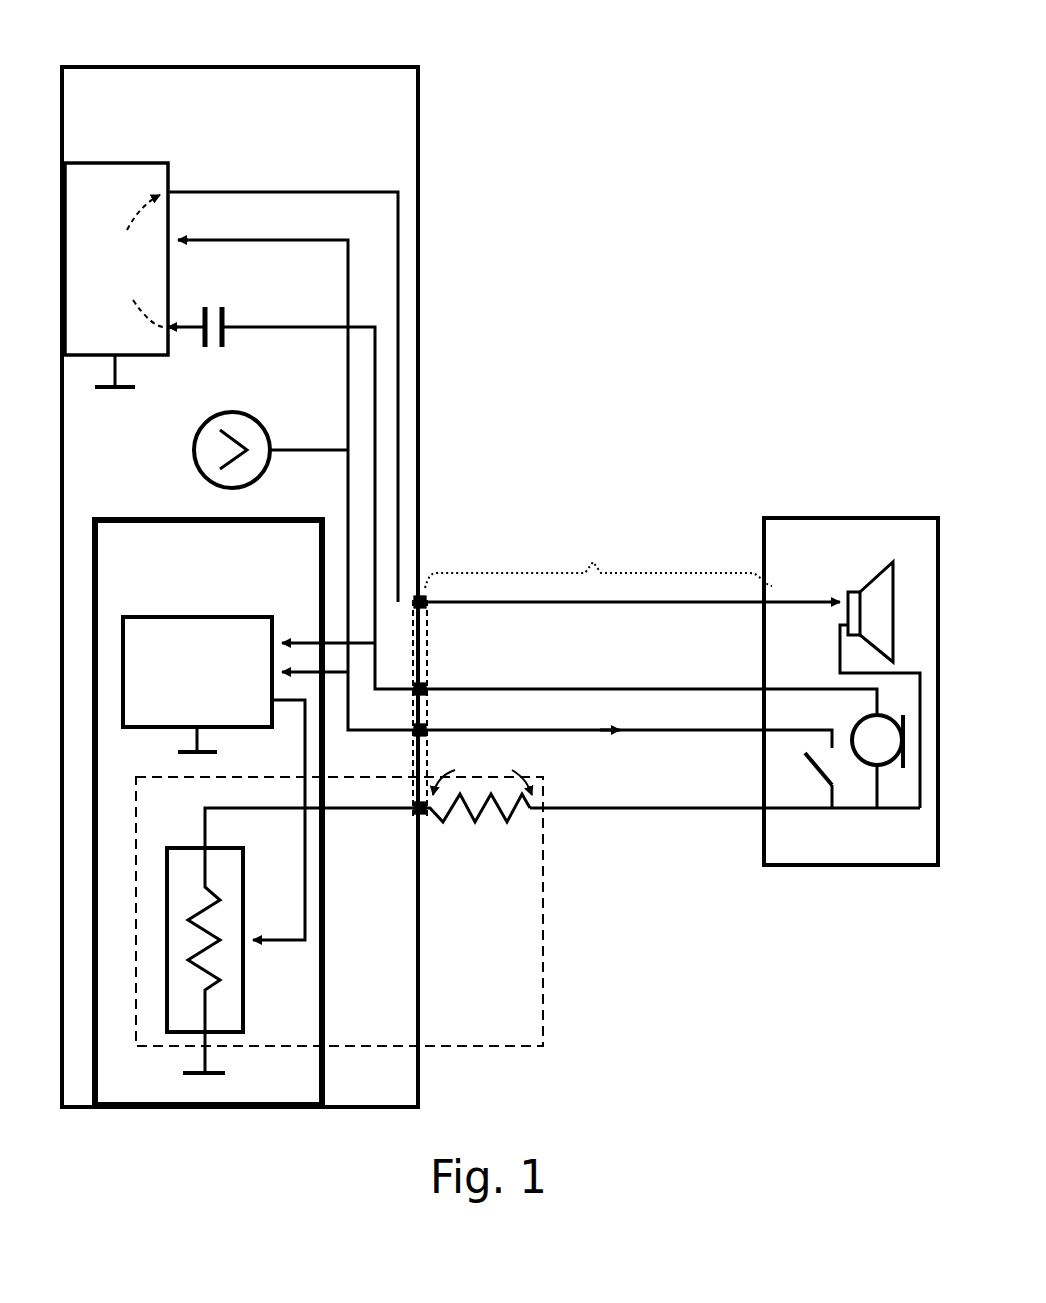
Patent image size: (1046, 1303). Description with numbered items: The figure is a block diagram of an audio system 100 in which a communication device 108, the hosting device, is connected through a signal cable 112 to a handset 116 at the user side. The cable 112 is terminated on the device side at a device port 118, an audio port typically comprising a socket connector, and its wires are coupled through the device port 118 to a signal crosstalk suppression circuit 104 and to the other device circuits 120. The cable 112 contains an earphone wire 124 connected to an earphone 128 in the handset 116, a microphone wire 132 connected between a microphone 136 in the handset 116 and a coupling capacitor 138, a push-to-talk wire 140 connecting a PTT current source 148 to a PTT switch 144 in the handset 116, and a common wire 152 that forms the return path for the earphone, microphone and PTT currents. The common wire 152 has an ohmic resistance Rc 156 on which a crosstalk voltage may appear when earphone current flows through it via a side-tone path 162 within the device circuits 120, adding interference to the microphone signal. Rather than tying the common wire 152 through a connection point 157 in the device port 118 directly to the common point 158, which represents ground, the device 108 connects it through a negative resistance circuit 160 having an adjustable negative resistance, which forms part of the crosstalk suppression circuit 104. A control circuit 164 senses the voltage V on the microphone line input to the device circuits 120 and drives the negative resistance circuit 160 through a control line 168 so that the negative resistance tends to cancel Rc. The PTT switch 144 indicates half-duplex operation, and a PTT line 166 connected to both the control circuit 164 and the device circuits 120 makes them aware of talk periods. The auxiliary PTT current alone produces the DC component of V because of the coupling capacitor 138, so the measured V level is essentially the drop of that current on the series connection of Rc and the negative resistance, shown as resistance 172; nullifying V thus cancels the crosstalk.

The audio system 100 is at (458, 50).
The communication device 108 is at (118, 65).
The device circuits 120 is at (116, 162).
The side-tone path 162 is at (137, 217).
The coupling capacitor 138 is at (240, 306).
The common point 158 is at (112, 390).
The PTT current source 148 is at (262, 425).
The signal crosstalk suppression circuit 104 is at (142, 518).
The control circuit 164 is at (165, 617).
The PTT line 166 is at (350, 297).
The device port 118 is at (422, 594).
The signal cable 112 is at (668, 572).
The earphone wire 124 is at (728, 606).
The microphone wire 132 is at (522, 688).
The push-to-talk wire 140 is at (700, 733).
The earphone 128 is at (853, 591).
The handset 116 is at (840, 517).
The microphone 136 is at (880, 770).
The PTT switch 144 is at (818, 778).
The common wire 152 is at (675, 812).
The ohmic resistance Rc 156 is at (470, 822).
The connection point 157 is at (412, 815).
The negative resistance circuit 160 is at (187, 848).
The control line 168 is at (285, 943).
The series connection resistance 172 is at (545, 912).